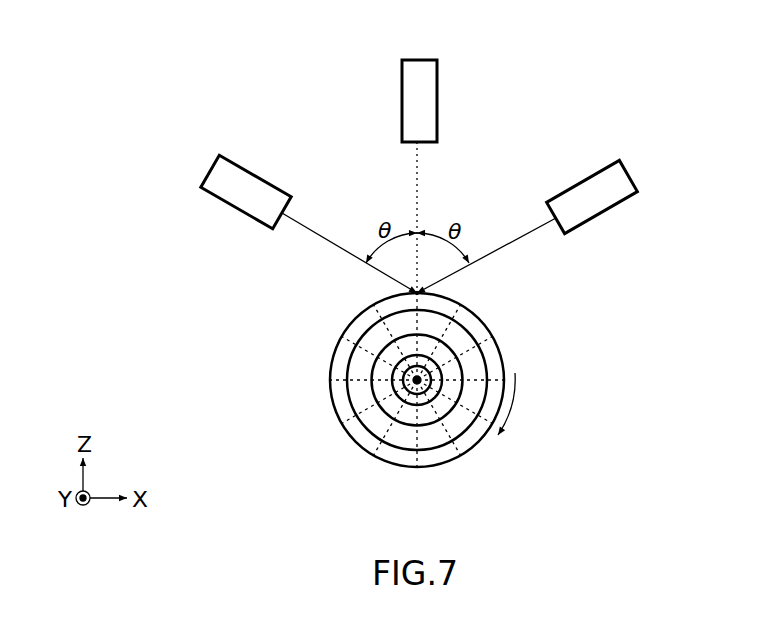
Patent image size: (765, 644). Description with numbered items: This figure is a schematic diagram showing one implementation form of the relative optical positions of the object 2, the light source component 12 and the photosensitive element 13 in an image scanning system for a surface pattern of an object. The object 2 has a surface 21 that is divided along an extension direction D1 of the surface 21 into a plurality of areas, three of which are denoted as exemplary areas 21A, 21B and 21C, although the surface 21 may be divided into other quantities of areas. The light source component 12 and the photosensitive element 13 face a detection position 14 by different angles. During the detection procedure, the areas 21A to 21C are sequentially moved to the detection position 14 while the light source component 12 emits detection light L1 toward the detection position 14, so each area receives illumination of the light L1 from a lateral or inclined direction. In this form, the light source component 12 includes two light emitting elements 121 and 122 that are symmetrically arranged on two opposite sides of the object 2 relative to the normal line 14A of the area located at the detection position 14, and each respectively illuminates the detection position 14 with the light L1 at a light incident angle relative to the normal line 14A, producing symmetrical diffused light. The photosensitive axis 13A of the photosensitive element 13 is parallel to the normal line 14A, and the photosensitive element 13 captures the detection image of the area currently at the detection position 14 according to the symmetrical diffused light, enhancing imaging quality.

The object 2 is at (497, 343).
The light source component 12 is at (162, 40).
The light emitting element 121 is at (252, 172).
The light emitting element 122 is at (590, 176).
The photosensitive element 13 is at (438, 100).
The photosensitive axis 13A is at (419, 163).
The detection position 14 is at (418, 296).
The normal line 14A is at (419, 198).
The surface 21 is at (251, 292).
The area 21A is at (357, 315).
The area 21B is at (333, 406).
The area 21C is at (355, 443).
The detection light L1 is at (298, 221).
The extension direction D1 is at (498, 420).